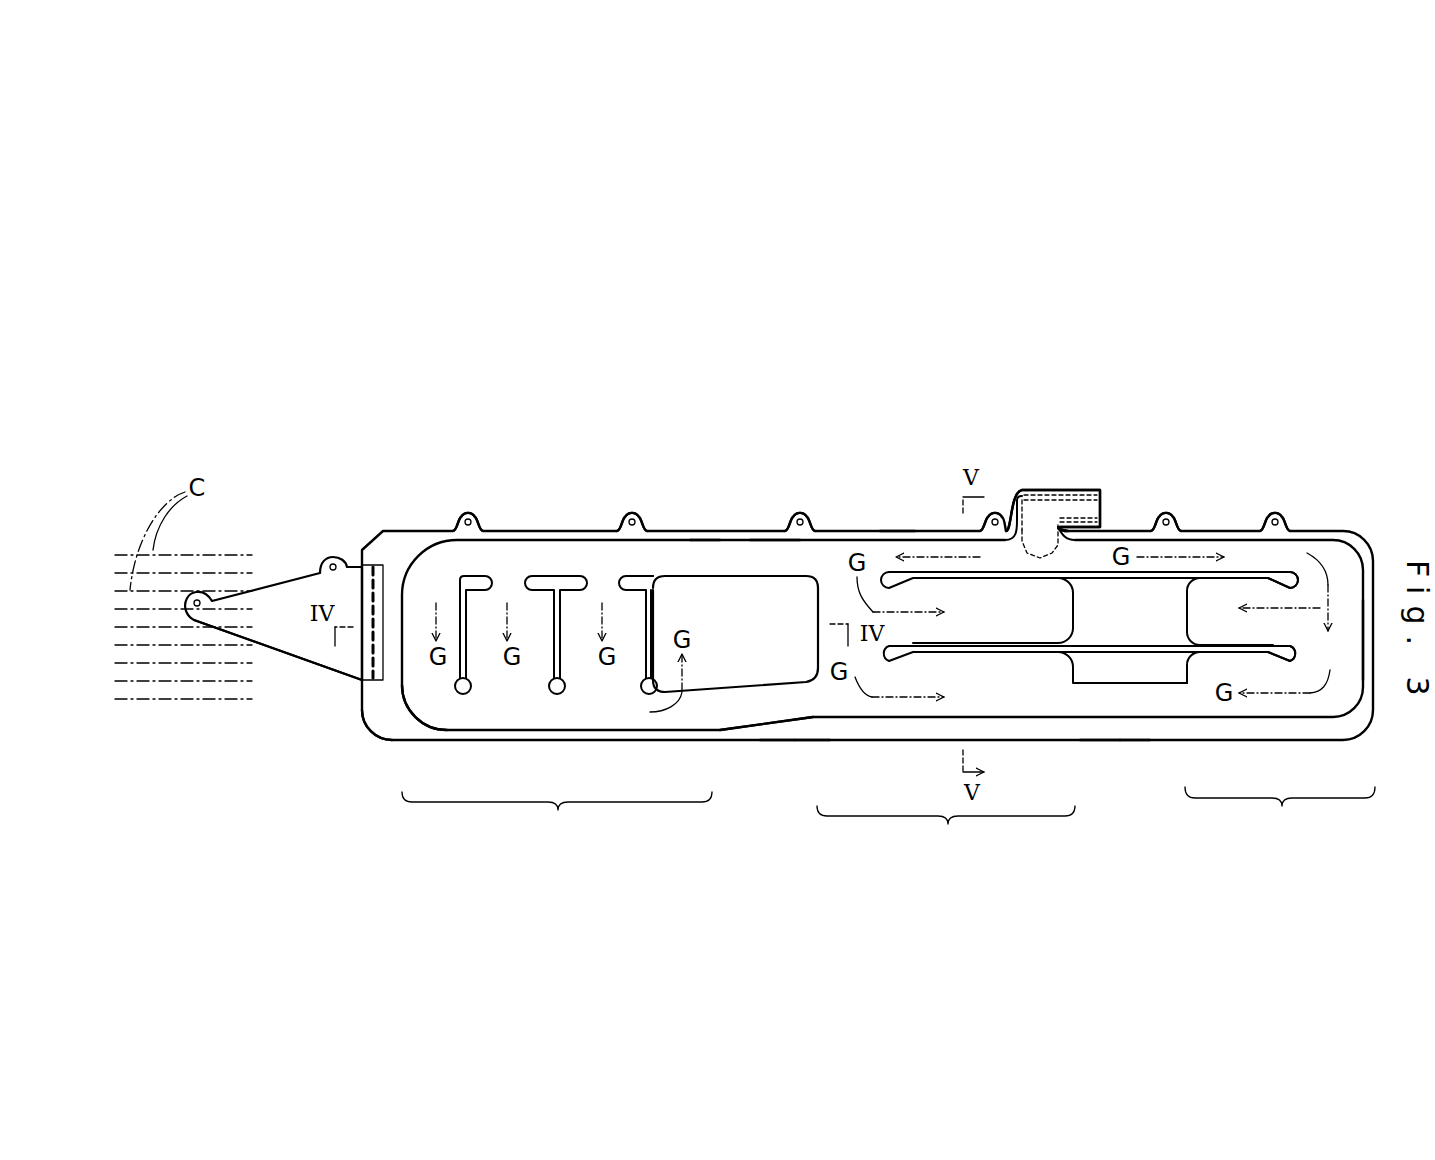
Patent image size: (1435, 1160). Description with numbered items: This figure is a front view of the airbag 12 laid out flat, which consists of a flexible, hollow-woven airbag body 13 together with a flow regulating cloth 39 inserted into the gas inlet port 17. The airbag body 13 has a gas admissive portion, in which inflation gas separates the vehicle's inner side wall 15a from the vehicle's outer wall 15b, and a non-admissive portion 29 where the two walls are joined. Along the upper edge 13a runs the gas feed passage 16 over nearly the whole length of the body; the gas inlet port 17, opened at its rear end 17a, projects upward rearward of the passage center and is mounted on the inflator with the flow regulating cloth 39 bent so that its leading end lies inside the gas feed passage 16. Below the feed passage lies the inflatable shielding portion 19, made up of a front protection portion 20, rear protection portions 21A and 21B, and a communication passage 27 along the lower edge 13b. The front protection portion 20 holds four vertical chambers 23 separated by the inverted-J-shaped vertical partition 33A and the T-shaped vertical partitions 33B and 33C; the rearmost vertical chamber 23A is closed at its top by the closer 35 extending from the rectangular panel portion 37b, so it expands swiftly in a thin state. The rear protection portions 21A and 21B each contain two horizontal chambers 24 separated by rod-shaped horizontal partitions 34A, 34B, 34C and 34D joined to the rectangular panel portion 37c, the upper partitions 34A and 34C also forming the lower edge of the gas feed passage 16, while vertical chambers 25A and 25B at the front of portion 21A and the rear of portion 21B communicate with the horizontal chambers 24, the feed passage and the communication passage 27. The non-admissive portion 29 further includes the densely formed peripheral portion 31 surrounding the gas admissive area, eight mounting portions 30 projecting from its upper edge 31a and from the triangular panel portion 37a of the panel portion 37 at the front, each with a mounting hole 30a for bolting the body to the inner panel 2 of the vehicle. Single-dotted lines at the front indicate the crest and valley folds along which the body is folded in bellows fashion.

The inner panel 2 is at (272, 597).
The airbag 12 is at (1277, 400).
The airbag body 13 is at (1317, 517).
The upper edge 13a is at (703, 537).
The lower edge 13b is at (808, 730).
The vehicle's inner side wall 15a is at (428, 693).
The vehicle's outer wall 15b is at (442, 707).
The gas feed passage 16 is at (773, 558).
The gas inlet port 17 is at (1067, 508).
The rear end 17a is at (1097, 507).
The inflatable shielding portion 19 is at (752, 727).
The front protection portion 20 is at (557, 817).
The rear protection portion 21A is at (946, 831).
The rear protection portion 21B is at (1280, 814).
The vertical chambers 23 is at (422, 603).
The vertical chamber 23A is at (688, 610).
The horizontal chambers 24 is at (1190, 605).
The vertical chamber 25A is at (832, 614).
The vertical chamber 25B is at (1347, 607).
The communication passage 27 is at (783, 710).
The non-admissive portion 29 is at (1114, 815).
The mounting portions 30 is at (1207, 440).
The mounting hole 30a is at (473, 517).
The peripheral portion 31 is at (1100, 728).
The upper edge 31a is at (897, 537).
The vertical partition 33A is at (466, 630).
The vertical partition 33B is at (553, 577).
The vertical partition 33C is at (643, 689).
The horizontal partition 34A is at (973, 578).
The horizontal partition 34B is at (973, 652).
The horizontal partition 34C is at (1247, 570).
The horizontal partition 34D is at (1296, 657).
The closer 35 is at (681, 572).
The panel portion 37 is at (310, 701).
The triangular panel portion 37a is at (292, 640).
The rectangular panel portion 37b is at (730, 580).
The rectangular panel portion 37c is at (1163, 683).
The flow regulating cloth 39 is at (1033, 510).